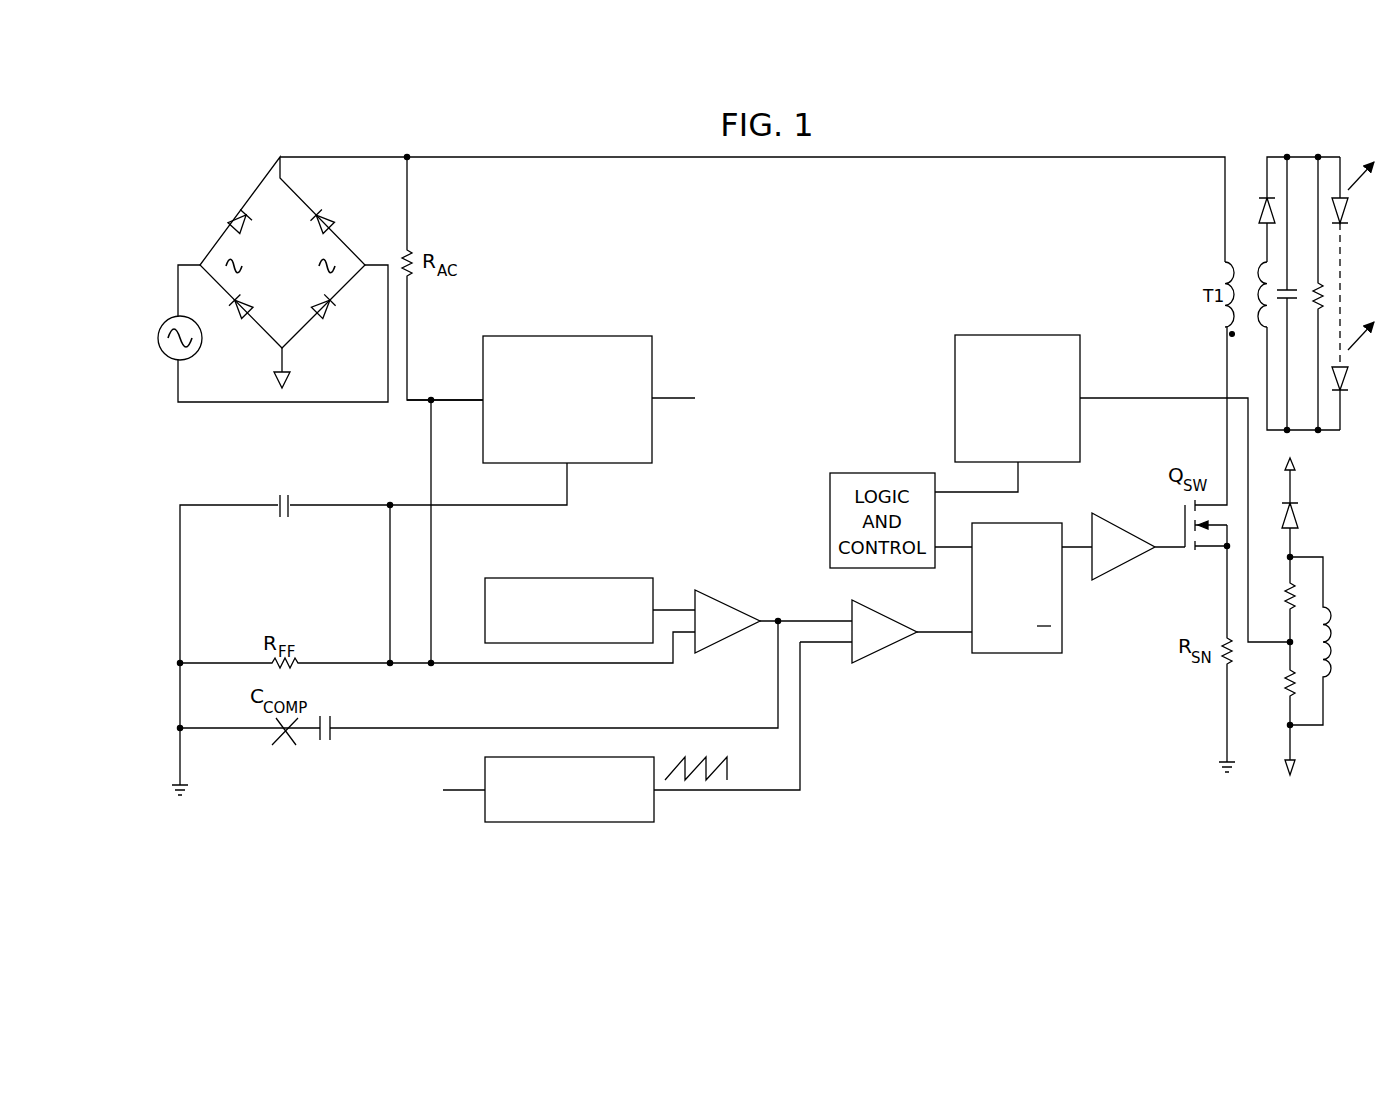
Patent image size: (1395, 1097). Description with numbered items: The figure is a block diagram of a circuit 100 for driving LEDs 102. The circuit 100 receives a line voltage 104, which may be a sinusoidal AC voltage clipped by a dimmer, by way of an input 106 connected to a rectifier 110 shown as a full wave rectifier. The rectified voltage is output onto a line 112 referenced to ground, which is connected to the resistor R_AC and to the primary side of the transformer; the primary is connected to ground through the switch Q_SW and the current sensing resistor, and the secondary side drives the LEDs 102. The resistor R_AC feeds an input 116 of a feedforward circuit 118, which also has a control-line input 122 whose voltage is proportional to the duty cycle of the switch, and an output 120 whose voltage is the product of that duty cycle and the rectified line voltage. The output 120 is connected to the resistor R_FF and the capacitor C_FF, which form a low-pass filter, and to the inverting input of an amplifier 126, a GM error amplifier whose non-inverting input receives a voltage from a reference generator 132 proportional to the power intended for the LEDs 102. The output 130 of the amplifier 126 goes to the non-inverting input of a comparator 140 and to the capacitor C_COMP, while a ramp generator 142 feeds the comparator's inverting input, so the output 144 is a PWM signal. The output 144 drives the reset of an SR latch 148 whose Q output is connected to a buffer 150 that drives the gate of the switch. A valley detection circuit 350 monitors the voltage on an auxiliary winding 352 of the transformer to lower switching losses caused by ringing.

The circuit 100 is at (336, 104).
The LEDs 102 is at (1347, 138).
The line voltage 104 is at (158, 340).
The input 106 is at (246, 339).
The rectifier 110 is at (213, 208).
The line 112 is at (1035, 157).
The input 116 is at (463, 400).
The feedforward circuit 118 is at (556, 335).
The output 120 is at (505, 507).
The input 122 is at (672, 398).
The amplifier 126 is at (727, 598).
The output 130 is at (798, 618).
The reference generator 132 is at (565, 576).
The comparator 140 is at (885, 650).
The ramp generator 142 is at (569, 823).
The output 144 is at (937, 633).
The latch 148 is at (1018, 655).
The buffer 150 is at (1123, 562).
The valley detection circuit 350 is at (1028, 333).
The auxiliary winding 352 is at (1345, 729).